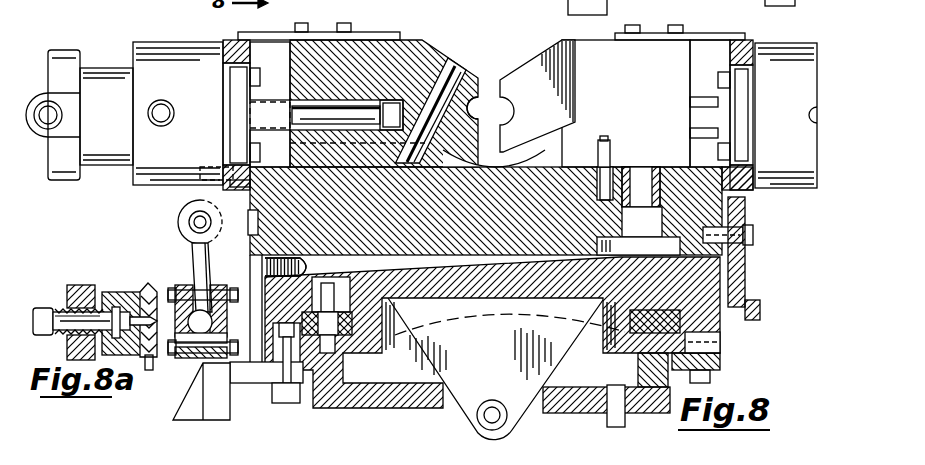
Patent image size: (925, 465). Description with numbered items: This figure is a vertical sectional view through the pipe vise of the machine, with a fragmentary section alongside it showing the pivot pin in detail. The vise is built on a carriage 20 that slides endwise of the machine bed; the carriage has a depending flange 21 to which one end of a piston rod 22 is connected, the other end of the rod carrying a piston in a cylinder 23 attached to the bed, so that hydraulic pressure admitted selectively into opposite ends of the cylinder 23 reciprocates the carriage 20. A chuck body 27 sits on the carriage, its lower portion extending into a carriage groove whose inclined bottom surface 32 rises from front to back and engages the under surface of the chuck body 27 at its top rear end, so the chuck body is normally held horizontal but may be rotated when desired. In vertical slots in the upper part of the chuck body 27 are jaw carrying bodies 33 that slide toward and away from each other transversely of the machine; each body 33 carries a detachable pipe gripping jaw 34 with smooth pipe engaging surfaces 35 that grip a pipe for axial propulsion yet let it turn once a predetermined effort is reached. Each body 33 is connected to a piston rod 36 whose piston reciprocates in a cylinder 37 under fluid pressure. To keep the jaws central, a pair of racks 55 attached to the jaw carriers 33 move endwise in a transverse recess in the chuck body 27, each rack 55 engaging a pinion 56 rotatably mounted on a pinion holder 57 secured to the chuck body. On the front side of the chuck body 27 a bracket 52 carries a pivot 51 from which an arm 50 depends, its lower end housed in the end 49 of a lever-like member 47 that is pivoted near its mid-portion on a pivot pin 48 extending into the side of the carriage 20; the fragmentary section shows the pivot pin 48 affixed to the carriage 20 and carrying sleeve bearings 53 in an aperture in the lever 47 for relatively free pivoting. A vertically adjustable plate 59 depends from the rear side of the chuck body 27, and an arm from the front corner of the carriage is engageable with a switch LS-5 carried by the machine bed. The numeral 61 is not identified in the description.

In FIG. 8A, the carriage 20 is at (123, 282).
In FIG. 8, the depending flange 21 is at (470, 400).
In FIG. 8, the piston rod 22 is at (497, 417).
In FIG. 8, the cylinder 23 is at (612, 9).
In FIG. 8, the chuck body 27 is at (563, 173).
In FIG. 8, the bottom surface 32 is at (312, 268).
In FIG. 8, the jaw carrying body 33 is at (392, 40).
In FIG. 8, the pipe gripping jaw 34 is at (525, 60).
In FIG. 8, the pipe engaging surface 35 is at (486, 118).
In FIG. 8, the piston rod 36 is at (262, 112).
In FIG. 8, the cylinder 37 is at (146, 66).
In FIG. 8A, the lever-like member 47 is at (87, 290).
In FIG. 8A, the pivot pin 48 is at (35, 320).
In FIG. 8, the lever end 49 is at (177, 330).
In FIG. 8, the arm 50 is at (193, 267).
In FIG. 8, the pivot 51 is at (193, 210).
In FIG. 8, the bracket 52 is at (222, 192).
In FIG. 8A, the sleeve bearing 53 is at (63, 303).
In FIG. 8, the rack 55 is at (613, 167).
In FIG. 8, the pinion 56 is at (660, 173).
In FIG. 8, the pinion holder 57 is at (650, 242).
In FIG. 8, the vertically adjustable plate 59 is at (740, 280).
In FIG. 8, the mounting bracket 61 is at (237, 380).
In FIG. 8, the switch LS-5 is at (193, 410).